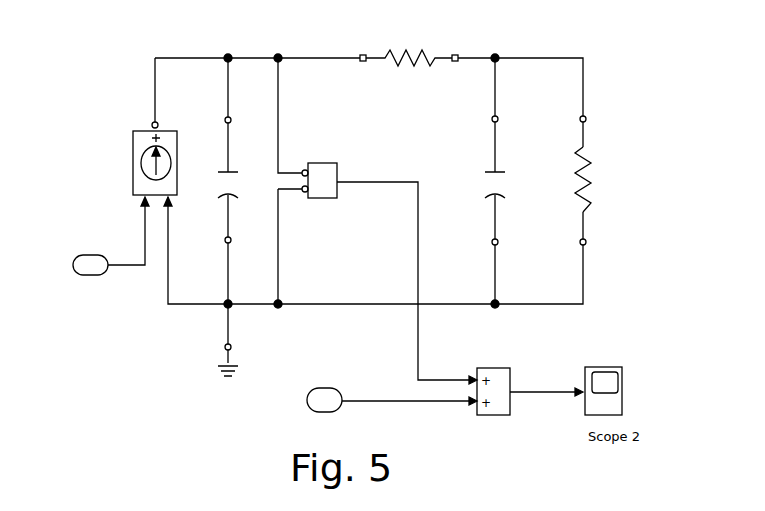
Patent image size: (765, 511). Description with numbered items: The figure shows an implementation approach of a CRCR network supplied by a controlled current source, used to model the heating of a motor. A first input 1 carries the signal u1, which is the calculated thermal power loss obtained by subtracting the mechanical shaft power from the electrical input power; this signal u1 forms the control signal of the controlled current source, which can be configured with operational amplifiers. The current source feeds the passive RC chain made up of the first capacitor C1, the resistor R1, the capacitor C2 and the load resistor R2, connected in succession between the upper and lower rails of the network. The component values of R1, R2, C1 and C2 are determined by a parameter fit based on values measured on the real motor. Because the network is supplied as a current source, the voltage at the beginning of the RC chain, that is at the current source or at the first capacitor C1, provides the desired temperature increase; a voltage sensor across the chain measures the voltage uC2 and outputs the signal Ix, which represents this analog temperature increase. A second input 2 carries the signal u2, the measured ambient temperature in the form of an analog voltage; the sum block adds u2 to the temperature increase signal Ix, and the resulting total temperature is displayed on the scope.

The inport u1 / controlled current source 1 is at (125, 203).
The input signal u1 is at (106, 286).
The first capacitor C1 is at (214, 185).
The resistor R1 is at (409, 73).
The capacitor C2 is at (480, 185).
The load resistor R2 is at (565, 179).
The voltage sensor output uC2 is at (392, 273).
The current signal Ix is at (342, 158).
The inport u2 2 is at (392, 400).
The input signal u2 is at (342, 418).